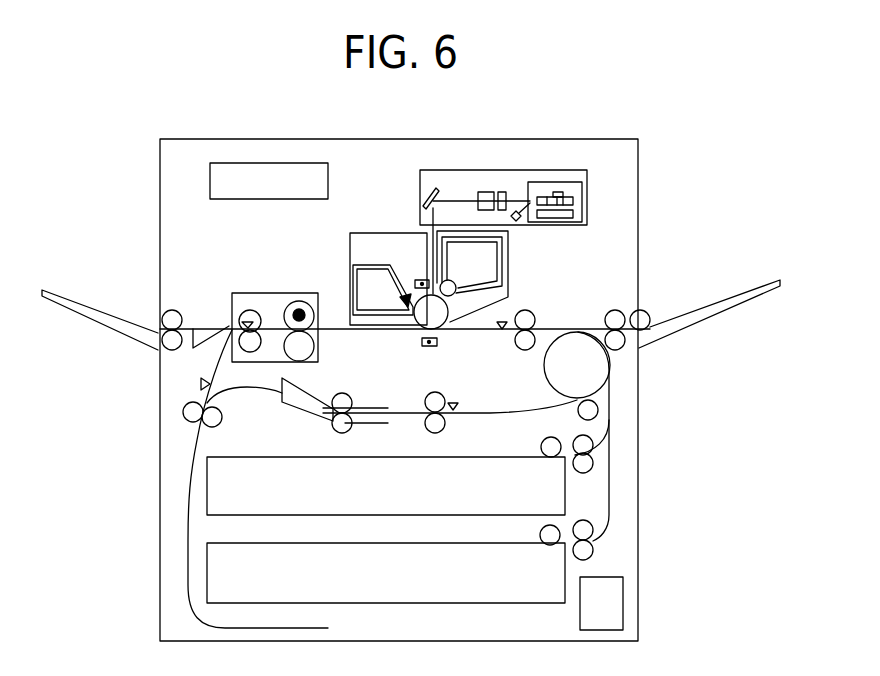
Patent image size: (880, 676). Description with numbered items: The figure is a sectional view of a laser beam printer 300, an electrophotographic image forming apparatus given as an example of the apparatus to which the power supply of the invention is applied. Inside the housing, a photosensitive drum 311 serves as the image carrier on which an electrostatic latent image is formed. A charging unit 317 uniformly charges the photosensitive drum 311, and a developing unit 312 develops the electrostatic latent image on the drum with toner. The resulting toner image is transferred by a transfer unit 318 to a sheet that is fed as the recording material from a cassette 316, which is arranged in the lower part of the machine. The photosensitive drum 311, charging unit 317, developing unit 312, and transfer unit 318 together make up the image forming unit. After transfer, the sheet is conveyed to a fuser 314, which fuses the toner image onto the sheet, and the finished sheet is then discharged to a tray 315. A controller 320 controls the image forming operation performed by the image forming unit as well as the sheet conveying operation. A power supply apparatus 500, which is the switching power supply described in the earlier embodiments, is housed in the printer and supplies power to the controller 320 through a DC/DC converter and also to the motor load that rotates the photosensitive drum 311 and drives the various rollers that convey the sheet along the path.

The laser beam printer 300 is at (547, 139).
The controller 320 is at (248, 199).
The tray 315 is at (90, 310).
The fuser 314 is at (278, 293).
The charging unit 317 is at (423, 279).
The developing unit 312 is at (458, 285).
The photosensitive drum 311 is at (437, 314).
The transfer unit 318 is at (438, 342).
The cassette 316 is at (550, 587).
The power supply apparatus 500 is at (580, 603).